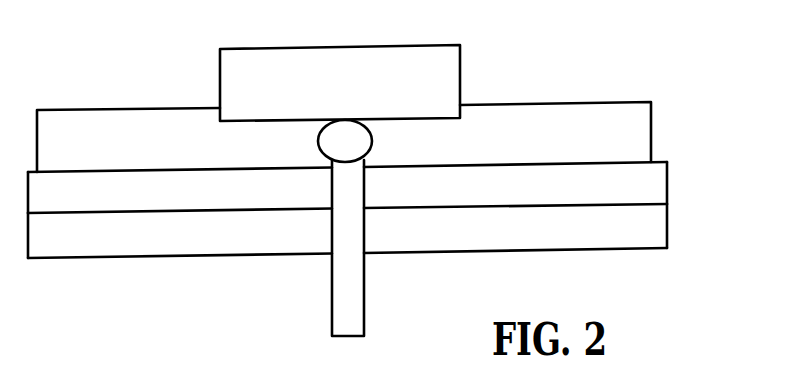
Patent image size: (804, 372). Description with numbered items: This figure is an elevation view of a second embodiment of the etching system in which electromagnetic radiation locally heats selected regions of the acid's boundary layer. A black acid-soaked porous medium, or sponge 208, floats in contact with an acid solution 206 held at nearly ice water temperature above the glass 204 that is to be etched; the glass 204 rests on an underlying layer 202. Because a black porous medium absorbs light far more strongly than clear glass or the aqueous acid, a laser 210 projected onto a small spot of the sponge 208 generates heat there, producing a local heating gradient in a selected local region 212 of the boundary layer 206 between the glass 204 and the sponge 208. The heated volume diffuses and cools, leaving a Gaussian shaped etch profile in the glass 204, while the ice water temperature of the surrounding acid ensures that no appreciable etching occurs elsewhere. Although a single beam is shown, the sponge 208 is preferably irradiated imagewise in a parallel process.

The substrate layer 202 is at (668, 226).
The glass 204 is at (668, 187).
The acid solution 206 is at (636, 141).
The black acid-soaked porous medium 208 is at (362, 95).
The laser 210 is at (333, 300).
The selected local region 212 is at (360, 137).